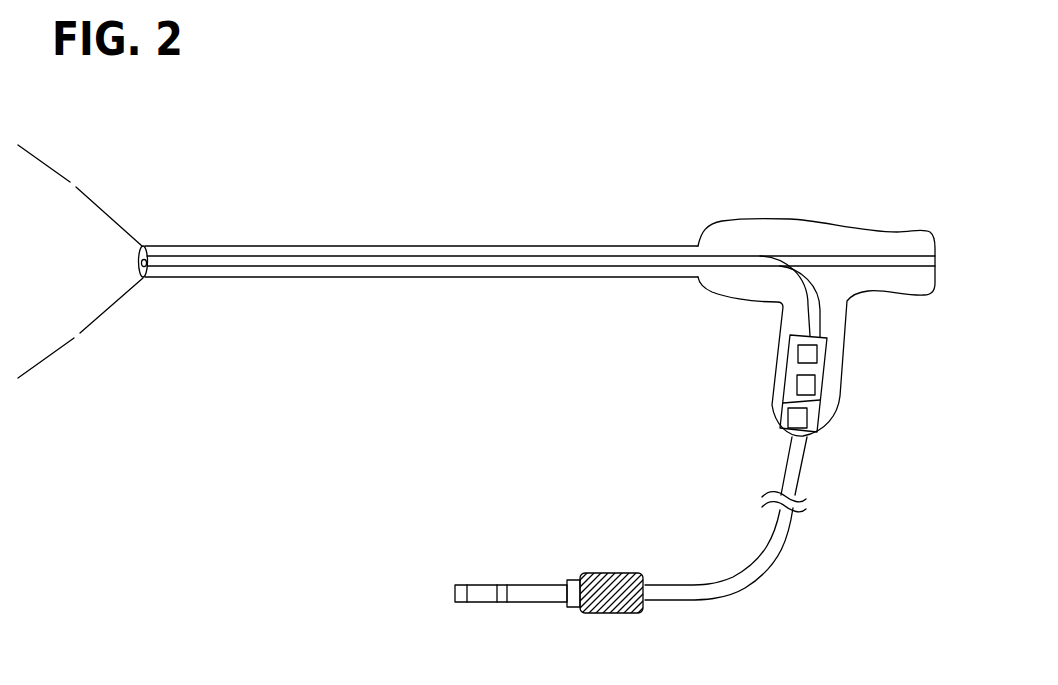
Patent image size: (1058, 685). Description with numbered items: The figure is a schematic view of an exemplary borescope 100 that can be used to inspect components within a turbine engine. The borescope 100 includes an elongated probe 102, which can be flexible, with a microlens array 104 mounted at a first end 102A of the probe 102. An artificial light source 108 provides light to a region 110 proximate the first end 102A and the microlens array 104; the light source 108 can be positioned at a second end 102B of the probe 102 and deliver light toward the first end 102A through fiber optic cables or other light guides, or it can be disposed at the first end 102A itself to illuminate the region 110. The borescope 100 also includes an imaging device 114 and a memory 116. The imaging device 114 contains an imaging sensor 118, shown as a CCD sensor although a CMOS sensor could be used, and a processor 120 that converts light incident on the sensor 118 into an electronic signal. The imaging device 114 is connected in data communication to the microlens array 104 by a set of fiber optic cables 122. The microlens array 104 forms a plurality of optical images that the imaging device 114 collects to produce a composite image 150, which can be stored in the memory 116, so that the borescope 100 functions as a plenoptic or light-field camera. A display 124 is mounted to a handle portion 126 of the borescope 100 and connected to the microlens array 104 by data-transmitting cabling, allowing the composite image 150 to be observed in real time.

The borescope 100 is at (773, 175).
The elongated probe 102 is at (419, 245).
The first end 102A is at (148, 276).
The second end 102B is at (553, 595).
The microlens array 104 is at (123, 262).
The artificial light source 108 is at (607, 583).
The region 110 is at (82, 333).
The imaging device 114 is at (817, 380).
The memory 116 is at (790, 423).
The imaging sensor 118 is at (808, 353).
The processor 120 is at (807, 382).
The set of fiber optic cables 122 is at (550, 263).
The display 124 is at (922, 232).
The handle portion 126 is at (798, 322).
The composite image 150 is at (803, 415).